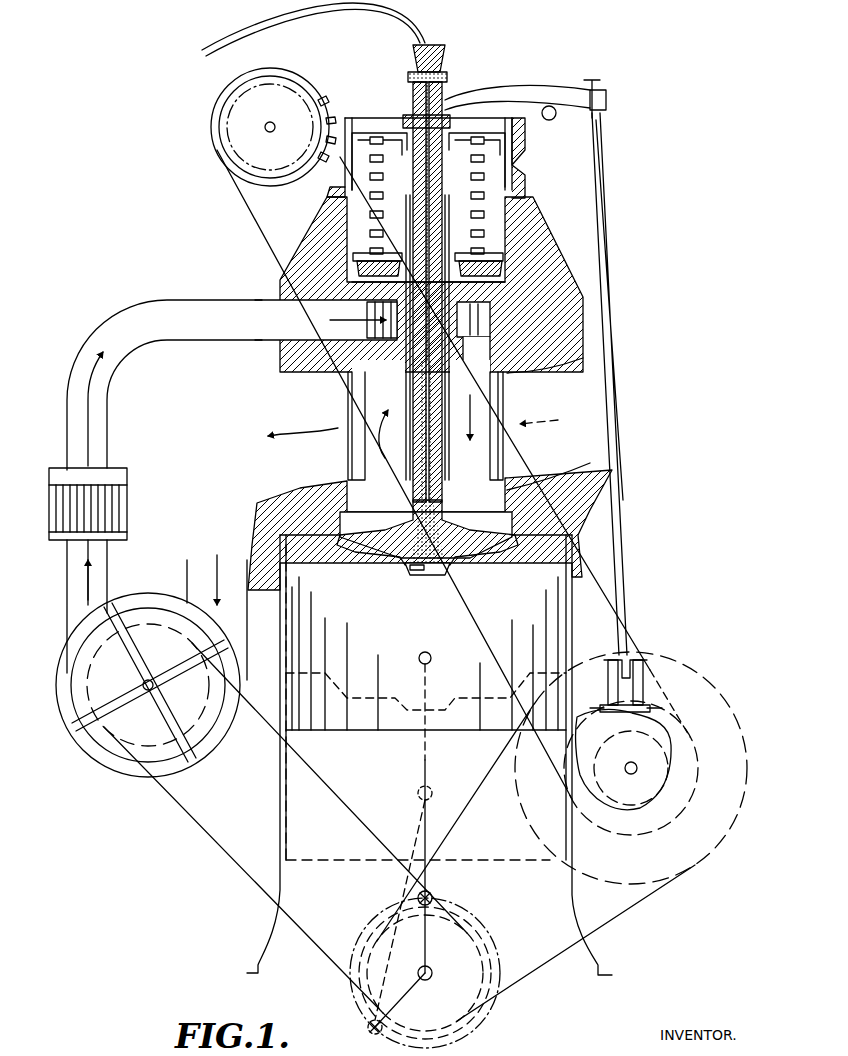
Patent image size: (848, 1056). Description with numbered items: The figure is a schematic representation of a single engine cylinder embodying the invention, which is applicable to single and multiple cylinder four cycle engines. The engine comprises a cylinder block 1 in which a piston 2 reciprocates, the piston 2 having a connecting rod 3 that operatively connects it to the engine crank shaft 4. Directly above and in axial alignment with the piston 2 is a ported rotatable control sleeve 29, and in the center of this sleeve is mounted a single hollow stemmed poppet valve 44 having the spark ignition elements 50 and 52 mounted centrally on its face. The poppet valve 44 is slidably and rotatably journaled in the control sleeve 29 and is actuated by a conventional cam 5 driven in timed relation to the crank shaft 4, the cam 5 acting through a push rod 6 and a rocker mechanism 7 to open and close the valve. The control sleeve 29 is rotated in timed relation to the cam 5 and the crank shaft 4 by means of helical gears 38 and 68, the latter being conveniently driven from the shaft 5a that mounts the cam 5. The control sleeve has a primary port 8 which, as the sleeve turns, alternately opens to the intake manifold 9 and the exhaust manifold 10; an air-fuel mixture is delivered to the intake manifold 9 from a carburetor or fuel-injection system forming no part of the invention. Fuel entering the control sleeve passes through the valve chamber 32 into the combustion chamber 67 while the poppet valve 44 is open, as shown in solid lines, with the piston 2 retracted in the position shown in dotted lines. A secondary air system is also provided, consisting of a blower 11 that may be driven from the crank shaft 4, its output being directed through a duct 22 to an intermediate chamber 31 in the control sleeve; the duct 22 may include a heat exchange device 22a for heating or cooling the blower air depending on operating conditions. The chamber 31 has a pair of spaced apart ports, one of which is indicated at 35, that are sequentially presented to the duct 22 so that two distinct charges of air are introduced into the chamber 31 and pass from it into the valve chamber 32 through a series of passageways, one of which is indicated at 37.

The cylinder block / head casting 1 is at (585, 508).
The piston 2 is at (554, 605).
The connecting rod 3 is at (428, 864).
The crank shaft 4 is at (448, 996).
The cam 5 is at (668, 738).
The shaft 5a is at (630, 774).
The push rod 6 is at (604, 271).
The rocker mechanism 7 is at (526, 86).
The primary port 8 is at (358, 446).
The intake manifold 9 is at (590, 437).
The exhaust manifold 10 is at (300, 374).
The blower 11 is at (96, 748).
The duct 22 is at (108, 391).
The heat exchange device 22a is at (127, 510).
The control sleeve 29 is at (523, 196).
The intermediate chamber 31 is at (490, 308).
The valve chamber 32 is at (483, 415).
The port 35 is at (347, 315).
The passageway 37 is at (475, 352).
The helical gear 38 is at (347, 118).
The poppet valve 44 is at (480, 555).
The spark ignition element 50 is at (427, 576).
The spark ignition element 52 is at (419, 570).
The combustion chamber 67 is at (522, 548).
The helical gear 68 is at (322, 72).